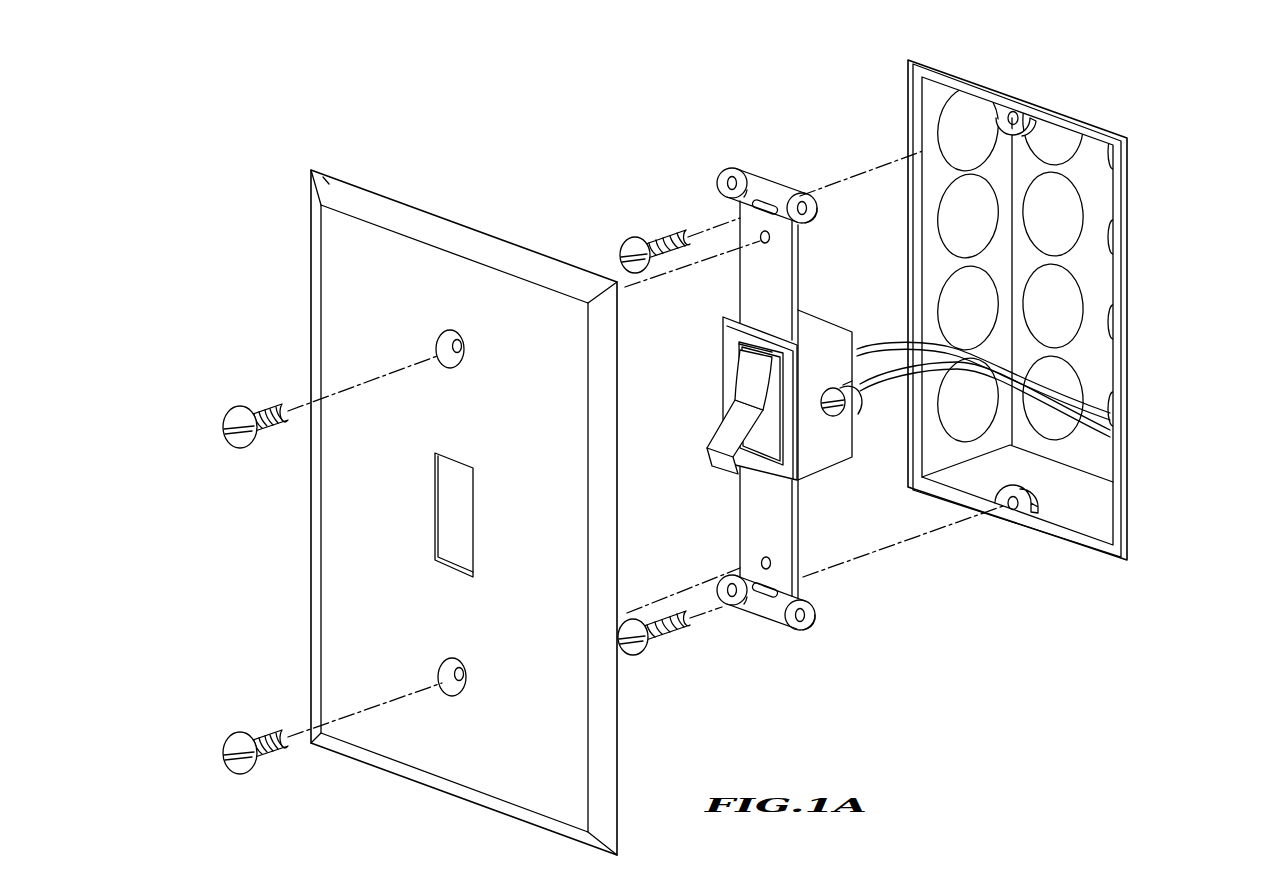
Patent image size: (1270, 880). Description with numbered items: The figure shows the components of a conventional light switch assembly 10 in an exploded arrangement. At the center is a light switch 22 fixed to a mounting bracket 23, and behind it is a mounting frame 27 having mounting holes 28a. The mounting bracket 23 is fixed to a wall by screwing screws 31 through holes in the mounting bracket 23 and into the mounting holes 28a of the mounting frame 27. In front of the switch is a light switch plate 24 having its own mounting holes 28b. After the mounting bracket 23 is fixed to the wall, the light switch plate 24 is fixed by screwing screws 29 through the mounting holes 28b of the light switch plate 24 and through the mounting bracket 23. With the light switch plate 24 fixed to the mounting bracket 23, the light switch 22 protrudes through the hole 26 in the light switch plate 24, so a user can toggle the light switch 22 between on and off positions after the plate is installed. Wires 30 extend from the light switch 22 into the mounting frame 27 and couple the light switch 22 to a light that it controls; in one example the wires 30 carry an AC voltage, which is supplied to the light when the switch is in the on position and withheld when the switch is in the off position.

The conventional light switch assembly 10 is at (565, 98).
The light switch 22 is at (718, 438).
The mounting bracket 23 is at (745, 284).
The light switch plate 24 is at (318, 168).
The hole 26 is at (450, 511).
The mounting frame 27 is at (1117, 383).
The mounting holes 28a is at (1007, 115).
The mounting holes 28b is at (458, 346).
The screws 29 is at (236, 411).
The wires 30 is at (1048, 386).
The screws 31 is at (641, 247).